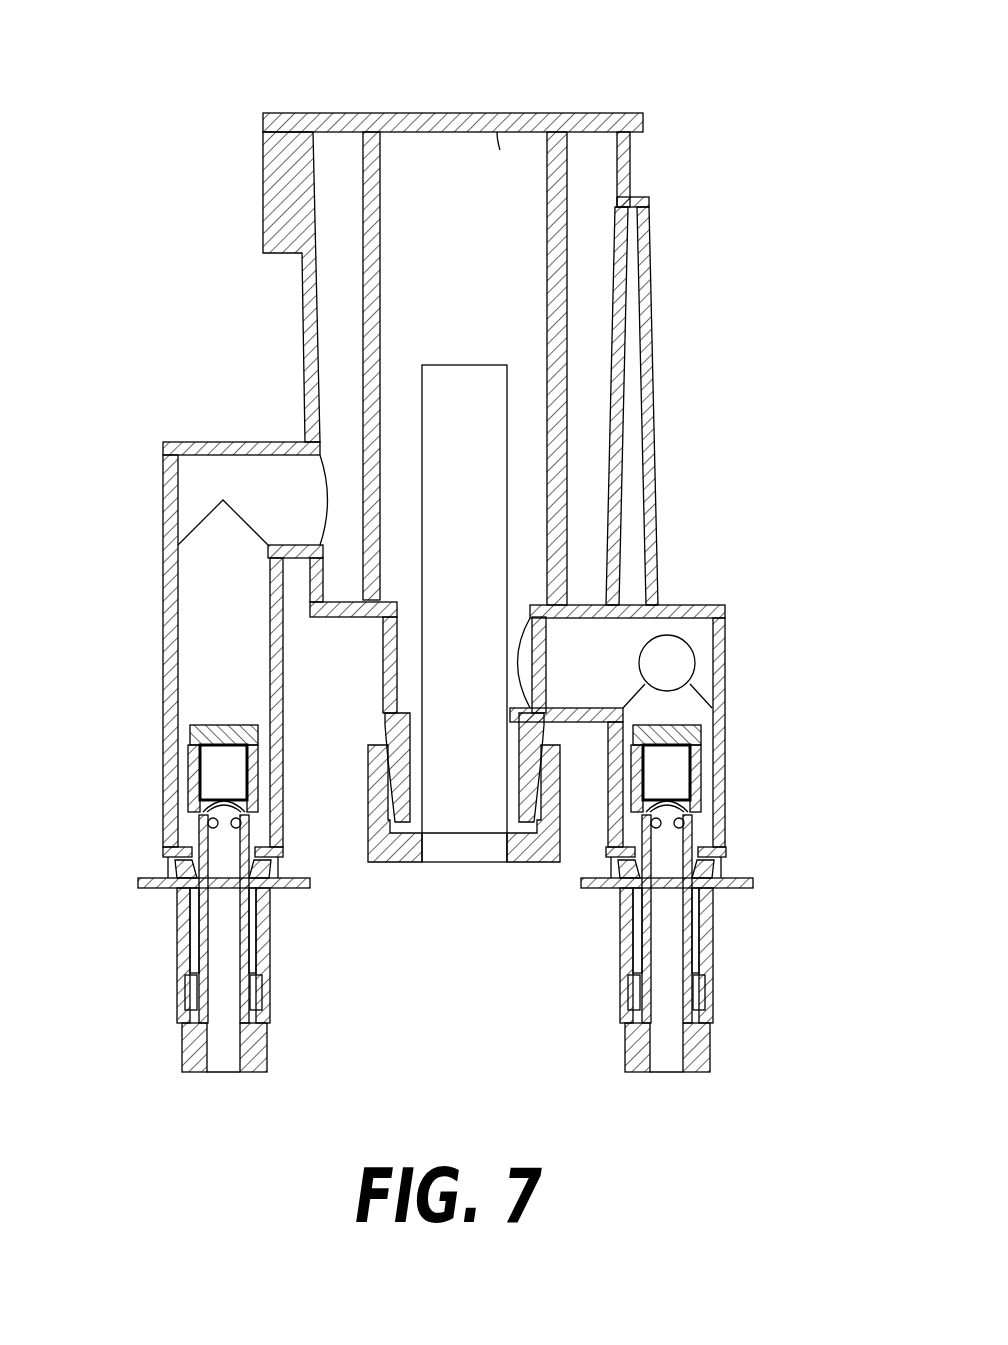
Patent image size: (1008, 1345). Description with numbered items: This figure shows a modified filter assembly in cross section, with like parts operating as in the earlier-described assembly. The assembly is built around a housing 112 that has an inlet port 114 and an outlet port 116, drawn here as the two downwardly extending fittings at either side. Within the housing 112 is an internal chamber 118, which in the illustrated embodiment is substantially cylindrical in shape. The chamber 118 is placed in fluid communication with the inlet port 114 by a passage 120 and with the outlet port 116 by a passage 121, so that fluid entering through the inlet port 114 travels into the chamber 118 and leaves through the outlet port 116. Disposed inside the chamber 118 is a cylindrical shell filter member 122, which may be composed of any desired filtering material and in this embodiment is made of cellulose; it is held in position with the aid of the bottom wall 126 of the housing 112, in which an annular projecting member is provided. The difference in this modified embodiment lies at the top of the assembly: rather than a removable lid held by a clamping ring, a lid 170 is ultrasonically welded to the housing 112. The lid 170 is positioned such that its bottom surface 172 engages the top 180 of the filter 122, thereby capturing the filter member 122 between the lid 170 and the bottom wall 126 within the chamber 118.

The lid 170 is at (379, 113).
The bottom surface 172 is at (528, 133).
The top of filter 180 is at (558, 128).
The cylindrical shell filter member 122 is at (567, 197).
The housing 112 is at (655, 287).
The internal chamber 118 is at (467, 287).
The passage 120 is at (220, 575).
The inlet port 114 is at (165, 678).
The bottom wall 126 is at (577, 625).
The passage 121 is at (620, 645).
The outlet port 116 is at (727, 725).